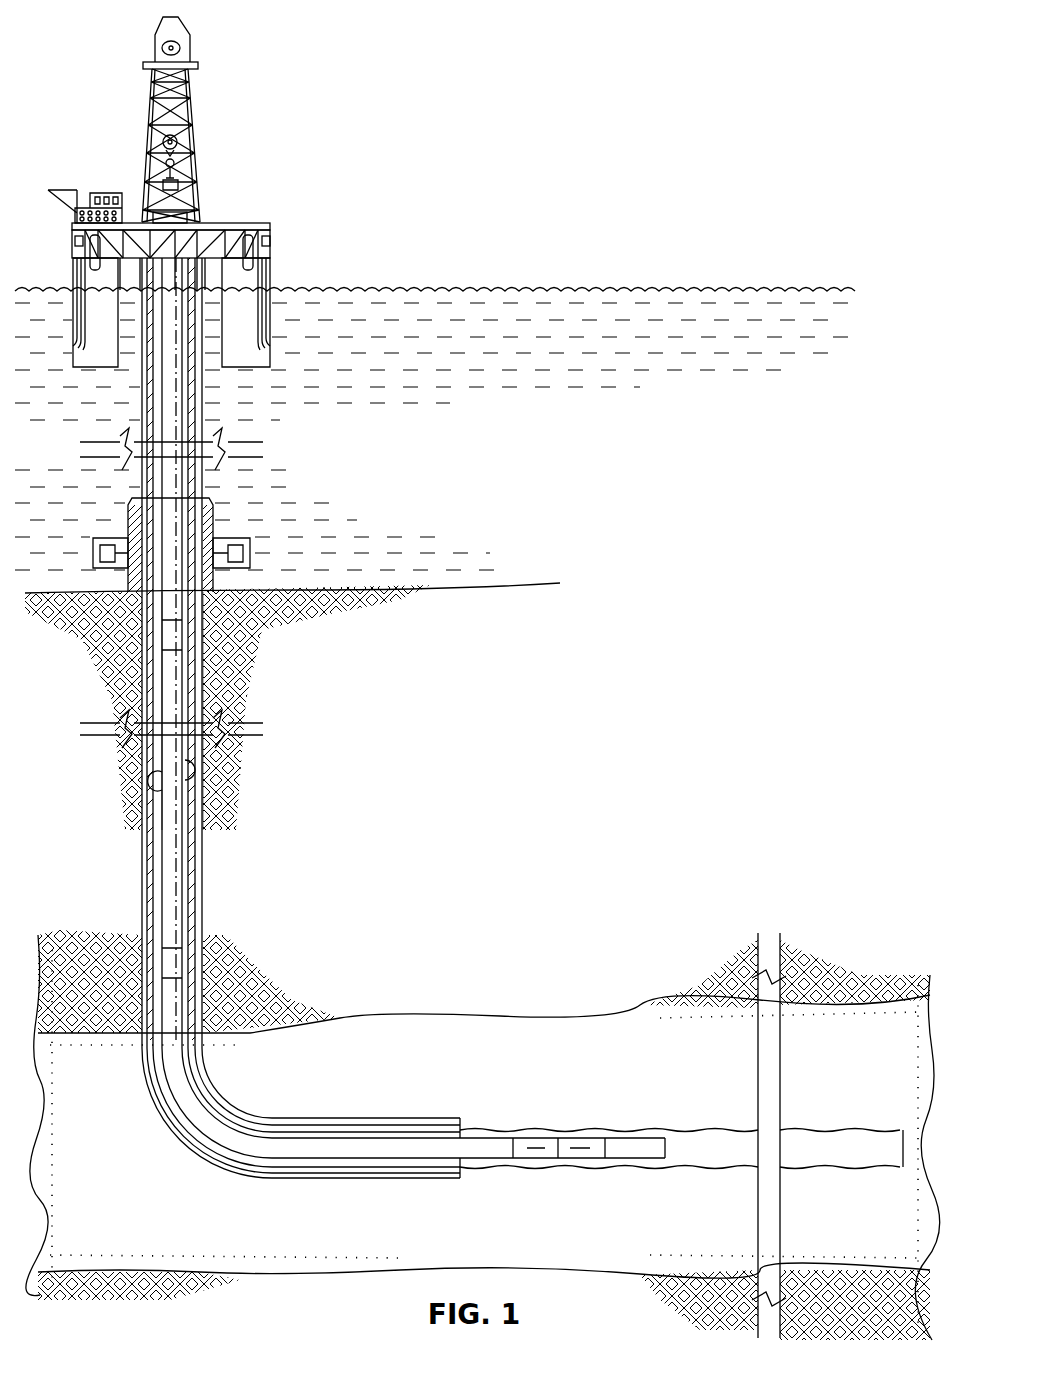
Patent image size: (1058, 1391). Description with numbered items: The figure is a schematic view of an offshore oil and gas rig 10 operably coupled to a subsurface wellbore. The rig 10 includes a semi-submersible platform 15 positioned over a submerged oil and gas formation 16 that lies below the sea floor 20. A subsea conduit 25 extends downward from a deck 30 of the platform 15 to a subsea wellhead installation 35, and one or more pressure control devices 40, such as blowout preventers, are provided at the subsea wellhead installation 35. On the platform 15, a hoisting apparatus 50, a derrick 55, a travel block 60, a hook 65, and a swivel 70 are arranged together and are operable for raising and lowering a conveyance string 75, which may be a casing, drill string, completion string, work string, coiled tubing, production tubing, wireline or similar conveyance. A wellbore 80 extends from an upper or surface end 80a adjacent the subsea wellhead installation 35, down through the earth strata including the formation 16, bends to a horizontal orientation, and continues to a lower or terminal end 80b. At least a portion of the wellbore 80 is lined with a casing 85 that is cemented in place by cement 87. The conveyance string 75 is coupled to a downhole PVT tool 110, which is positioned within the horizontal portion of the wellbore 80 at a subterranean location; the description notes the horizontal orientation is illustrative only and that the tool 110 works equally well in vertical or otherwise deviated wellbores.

The offshore oil and gas rig 10 is at (279, 117).
The semi-submersible platform 15 is at (258, 225).
The submerged oil and gas formation 16 is at (102, 1191).
The sea floor 20 is at (532, 585).
The subsea conduit 25 is at (206, 410).
The deck 30 is at (274, 253).
The subsea wellhead installation 35 is at (128, 520).
The pressure control device 40 is at (240, 550).
The hoisting apparatus 50 is at (196, 200).
The derrick 55 is at (155, 48).
The travel block 60 is at (162, 145).
The hook 65 is at (163, 166).
The swivel 70 is at (186, 145).
The conveyance string 75 is at (165, 605).
The wellbore 80 is at (190, 780).
The surface end 80a is at (207, 605).
The terminal end 80b is at (880, 1151).
The casing 85 is at (165, 790).
The cement 87 is at (142, 885).
The downhole PVT tool 110 is at (569, 1137).